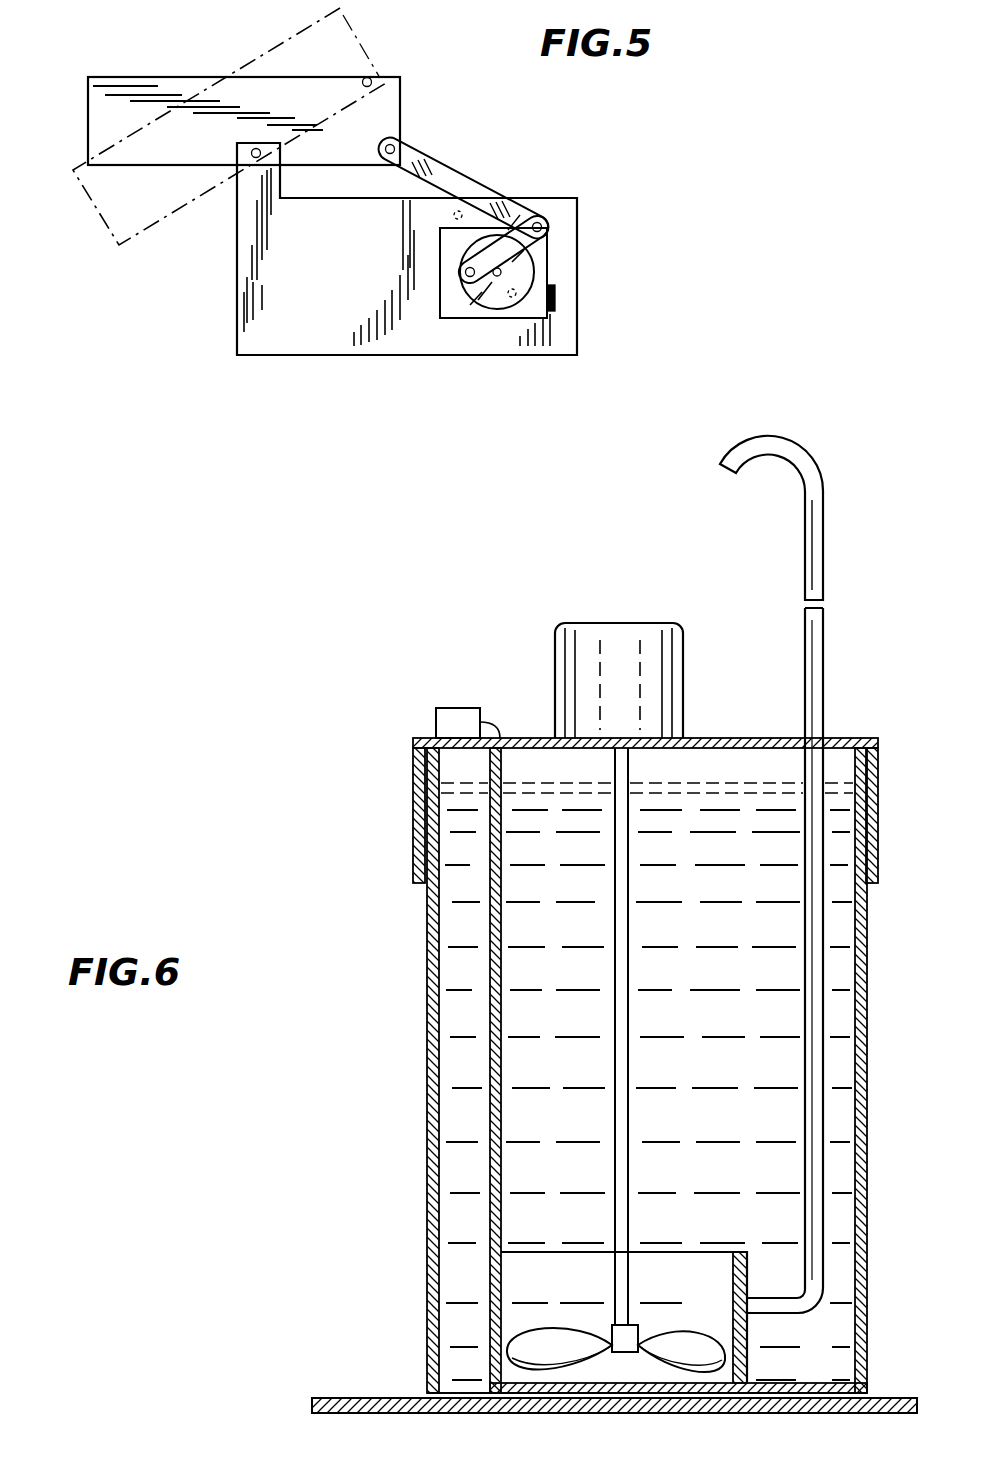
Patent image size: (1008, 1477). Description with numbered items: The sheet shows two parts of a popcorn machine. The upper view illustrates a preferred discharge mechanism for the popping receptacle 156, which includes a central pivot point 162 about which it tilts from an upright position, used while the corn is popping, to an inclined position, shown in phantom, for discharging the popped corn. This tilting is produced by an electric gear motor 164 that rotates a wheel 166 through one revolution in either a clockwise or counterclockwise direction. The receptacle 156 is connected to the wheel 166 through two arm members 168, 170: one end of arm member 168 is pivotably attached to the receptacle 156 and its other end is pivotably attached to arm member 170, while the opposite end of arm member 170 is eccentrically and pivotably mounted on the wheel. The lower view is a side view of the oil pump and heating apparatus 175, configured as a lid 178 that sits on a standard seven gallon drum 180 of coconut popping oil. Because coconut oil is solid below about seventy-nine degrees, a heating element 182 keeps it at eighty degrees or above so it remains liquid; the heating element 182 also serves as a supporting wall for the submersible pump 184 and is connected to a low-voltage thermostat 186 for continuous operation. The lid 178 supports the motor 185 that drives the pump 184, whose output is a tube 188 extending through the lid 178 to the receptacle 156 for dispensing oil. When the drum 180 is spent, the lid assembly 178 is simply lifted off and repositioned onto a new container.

In FIG. 5, the receptacle 156 is at (195, 160).
In FIG. 5, the central pivot point 162 is at (247, 164).
In FIG. 5, the electric gear motor 164 is at (558, 288).
In FIG. 5, the wheel 166 is at (487, 322).
In FIG. 5, the arm member 168 is at (474, 184).
In FIG. 5, the arm member 170 is at (548, 253).
In FIG. 6, the pump and heating apparatus 175 is at (382, 805).
In FIG. 6, the lid 178 is at (762, 736).
In FIG. 6, the drum 180 is at (428, 990).
In FIG. 6, the heating element 182 is at (497, 1155).
In FIG. 6, the submersible pump 184 is at (517, 1290).
In FIG. 6, the motor 185 is at (611, 652).
In FIG. 6, the low-voltage thermostat 186 is at (455, 718).
In FIG. 6, the tube 188 is at (805, 970).